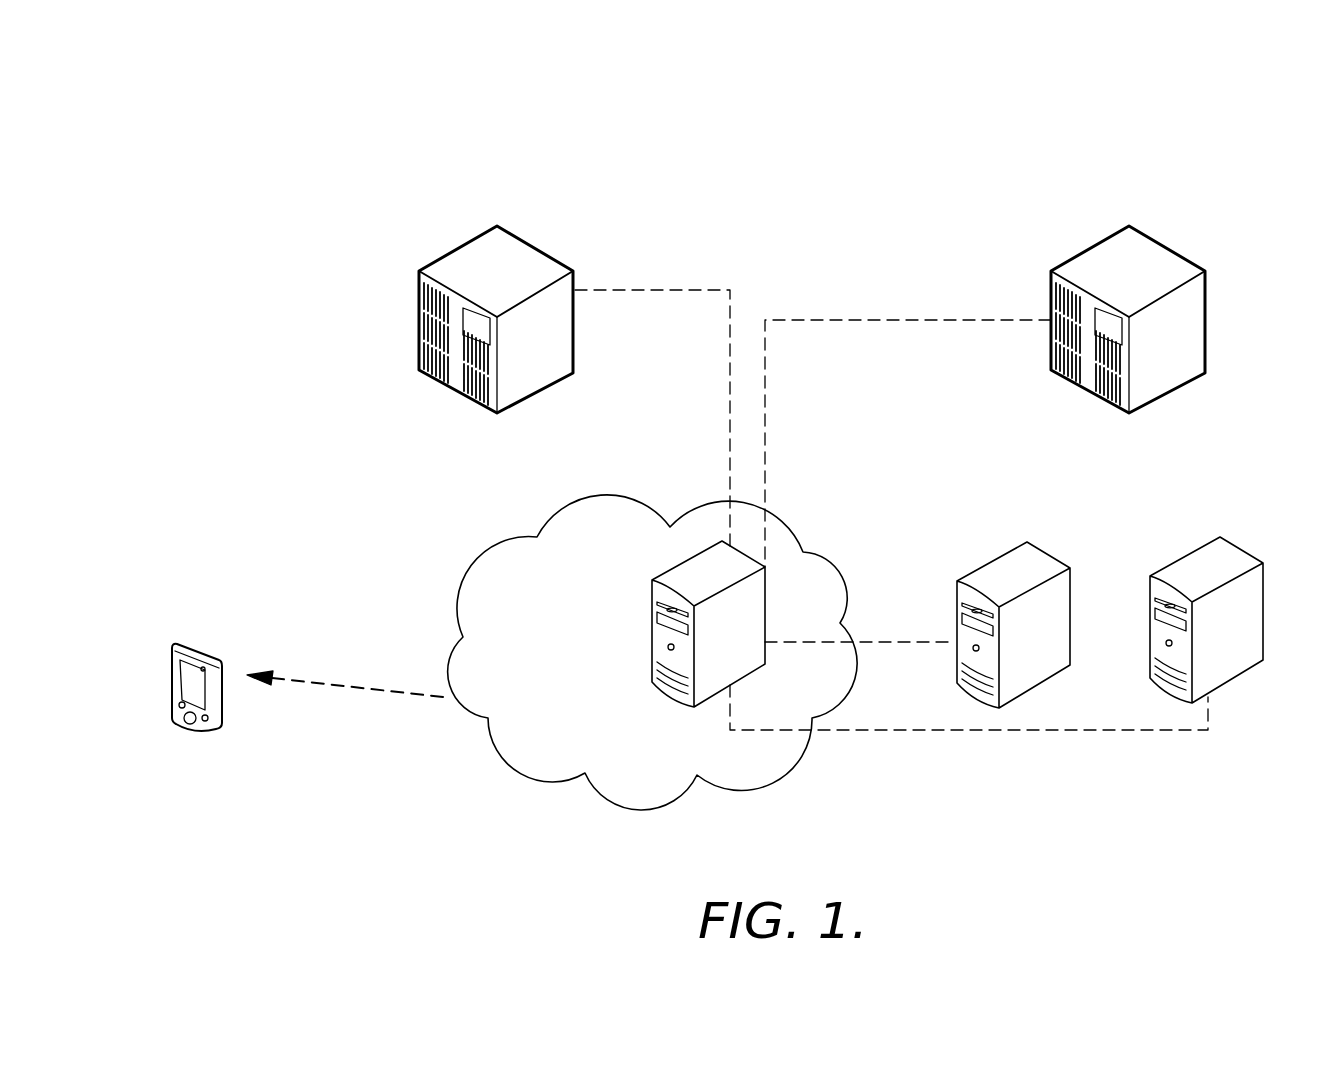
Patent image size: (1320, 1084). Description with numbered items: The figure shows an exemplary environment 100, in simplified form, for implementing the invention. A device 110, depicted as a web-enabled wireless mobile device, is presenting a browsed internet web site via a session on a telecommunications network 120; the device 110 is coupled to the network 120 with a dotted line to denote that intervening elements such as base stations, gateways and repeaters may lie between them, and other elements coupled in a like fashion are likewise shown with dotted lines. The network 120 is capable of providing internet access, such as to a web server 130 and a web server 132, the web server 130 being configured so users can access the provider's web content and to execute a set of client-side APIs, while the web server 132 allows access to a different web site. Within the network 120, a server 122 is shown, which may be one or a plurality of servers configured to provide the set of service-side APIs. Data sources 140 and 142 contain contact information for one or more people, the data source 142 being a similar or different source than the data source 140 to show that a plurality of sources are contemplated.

The environment 100 is at (227, 103).
The device 110 is at (204, 650).
The telecommunications network 120 is at (793, 537).
The server 122 is at (673, 567).
The web server 130 is at (518, 234).
The web server 132 is at (1150, 234).
The data source 140 is at (980, 567).
The data source 142 is at (1173, 562).